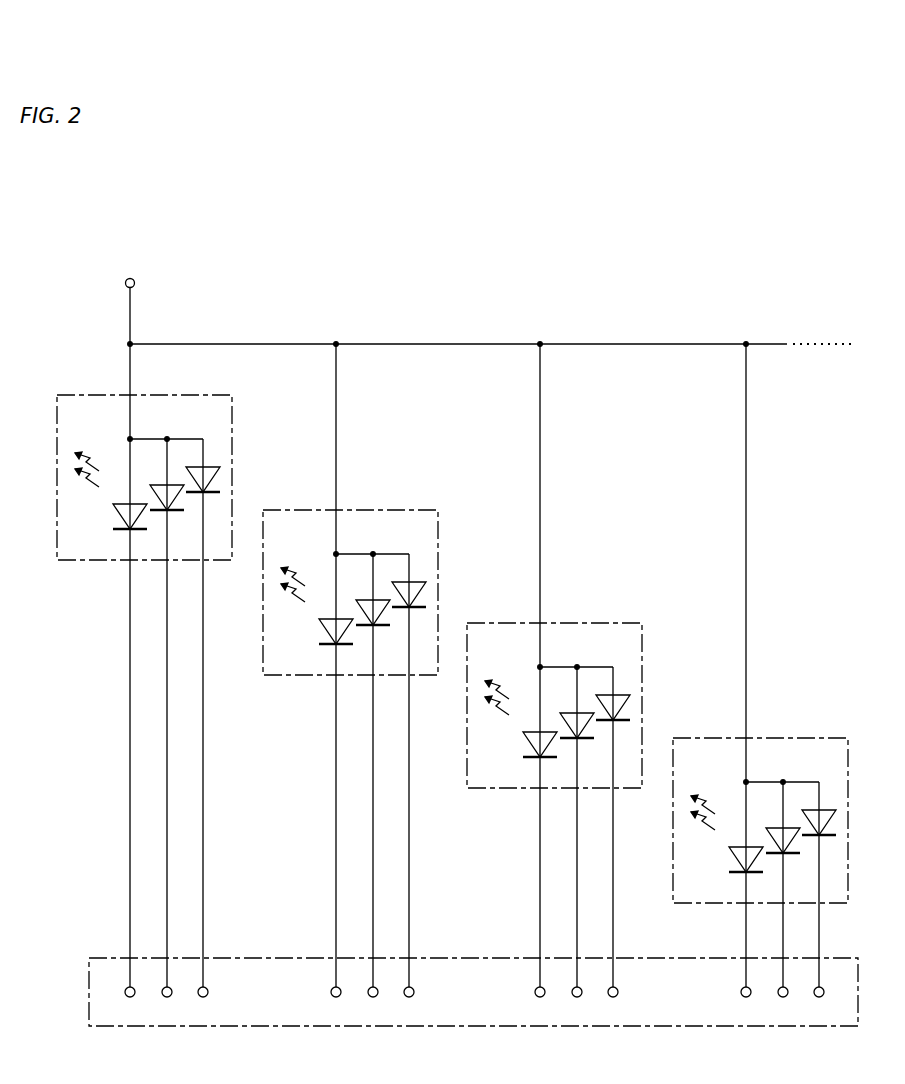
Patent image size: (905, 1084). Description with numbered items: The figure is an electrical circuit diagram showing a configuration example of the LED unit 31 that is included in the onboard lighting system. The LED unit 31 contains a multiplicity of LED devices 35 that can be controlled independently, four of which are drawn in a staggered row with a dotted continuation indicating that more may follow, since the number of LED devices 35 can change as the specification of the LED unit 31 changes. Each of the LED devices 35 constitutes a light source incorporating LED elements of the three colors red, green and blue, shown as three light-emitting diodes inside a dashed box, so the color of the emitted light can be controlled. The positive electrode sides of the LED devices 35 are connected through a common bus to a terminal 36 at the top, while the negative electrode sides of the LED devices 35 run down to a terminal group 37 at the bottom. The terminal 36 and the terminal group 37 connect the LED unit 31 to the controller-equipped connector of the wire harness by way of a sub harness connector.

The LED unit 31 is at (471, 309).
The LED device 35 is at (90, 395).
The terminal 36 is at (134, 279).
The terminal group 37 is at (107, 957).